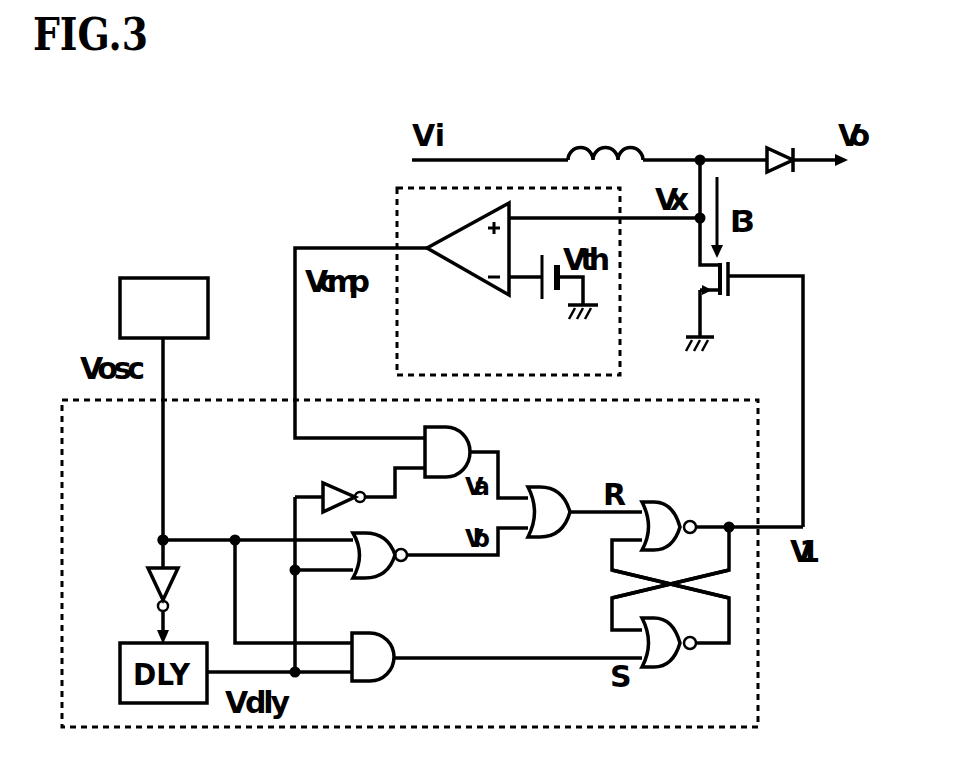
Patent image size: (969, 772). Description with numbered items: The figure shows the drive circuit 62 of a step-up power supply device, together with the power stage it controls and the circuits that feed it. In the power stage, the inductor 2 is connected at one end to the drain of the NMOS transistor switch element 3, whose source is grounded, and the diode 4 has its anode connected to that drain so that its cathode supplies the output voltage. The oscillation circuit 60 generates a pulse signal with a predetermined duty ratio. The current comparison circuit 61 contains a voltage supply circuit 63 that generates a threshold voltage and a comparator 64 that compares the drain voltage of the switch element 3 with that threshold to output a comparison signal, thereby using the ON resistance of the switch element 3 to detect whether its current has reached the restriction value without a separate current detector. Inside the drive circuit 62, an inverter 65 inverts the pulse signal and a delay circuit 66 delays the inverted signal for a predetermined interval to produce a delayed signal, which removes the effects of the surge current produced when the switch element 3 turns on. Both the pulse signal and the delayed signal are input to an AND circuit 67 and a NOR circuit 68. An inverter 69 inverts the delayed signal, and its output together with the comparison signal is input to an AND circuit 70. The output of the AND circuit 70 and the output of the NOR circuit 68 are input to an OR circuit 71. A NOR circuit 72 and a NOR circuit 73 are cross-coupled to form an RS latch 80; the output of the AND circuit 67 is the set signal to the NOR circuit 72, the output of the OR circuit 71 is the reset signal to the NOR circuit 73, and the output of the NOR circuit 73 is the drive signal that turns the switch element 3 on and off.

The inductor 2 is at (632, 150).
The NMOS transistor (switch element) 3 is at (723, 297).
The diode (rectifier) 4 is at (777, 178).
The oscillation circuit 60 is at (172, 278).
The current comparison circuit 61 is at (395, 225).
The drive circuit 62 is at (762, 590).
The voltage supply circuit 63 is at (540, 297).
The comparator 64 is at (447, 262).
The inverter 65 is at (158, 566).
The delay circuit 66 is at (140, 642).
The AND circuit 67 is at (380, 682).
The NOR circuit 68 is at (380, 578).
The inverter 69 is at (314, 482).
The AND circuit 70 is at (465, 430).
The OR circuit 71 is at (545, 537).
The NOR circuit 72 is at (665, 666).
The NOR circuit 73 is at (648, 500).
The RS latch 80 is at (598, 573).